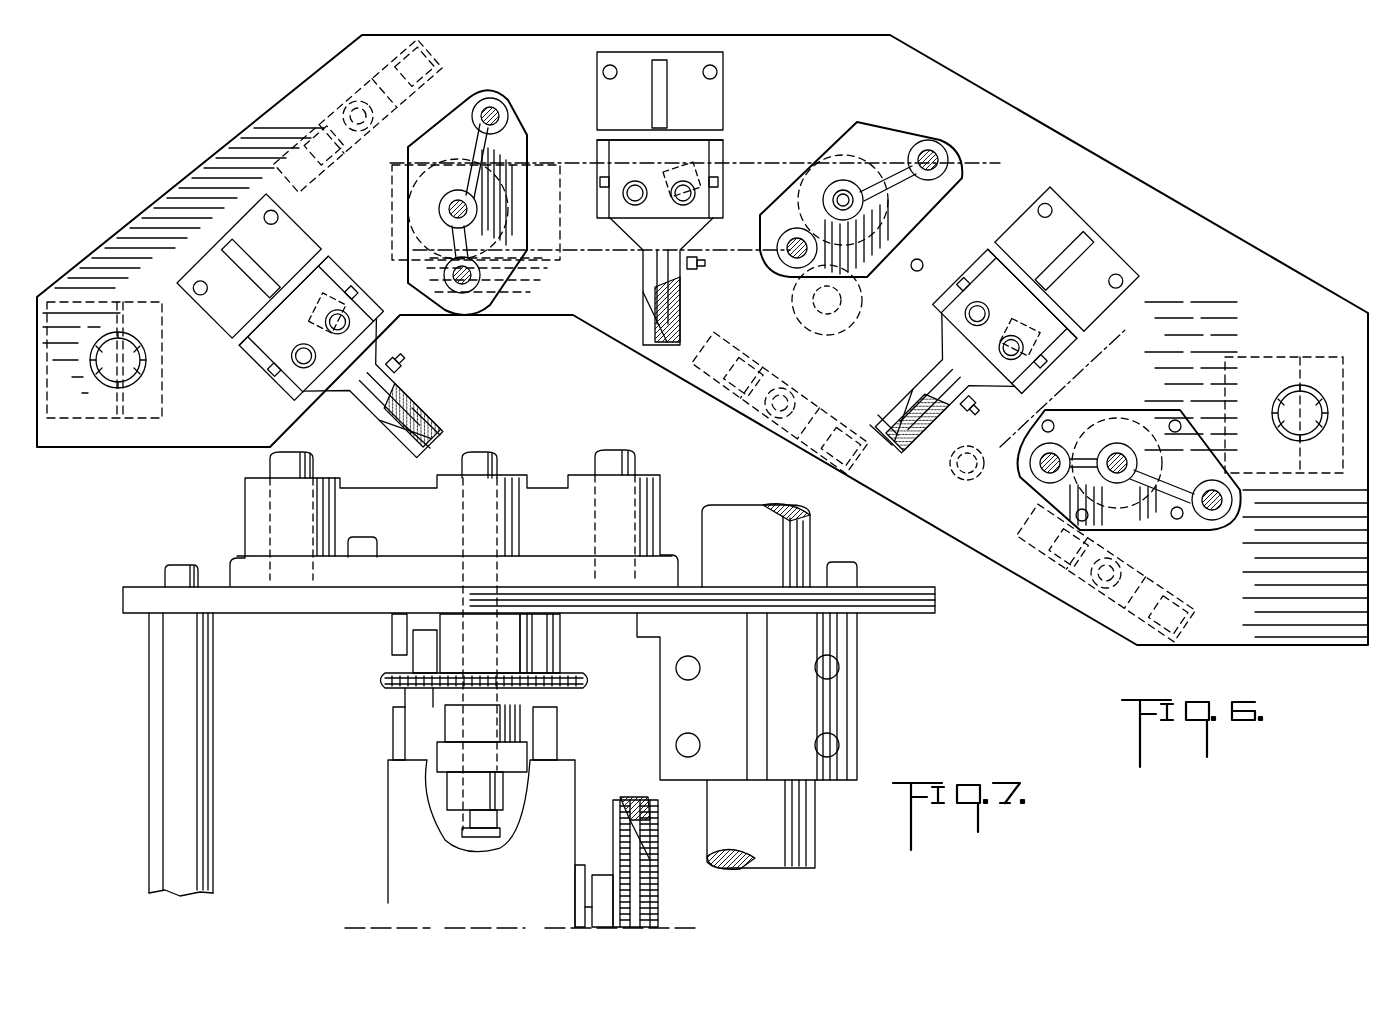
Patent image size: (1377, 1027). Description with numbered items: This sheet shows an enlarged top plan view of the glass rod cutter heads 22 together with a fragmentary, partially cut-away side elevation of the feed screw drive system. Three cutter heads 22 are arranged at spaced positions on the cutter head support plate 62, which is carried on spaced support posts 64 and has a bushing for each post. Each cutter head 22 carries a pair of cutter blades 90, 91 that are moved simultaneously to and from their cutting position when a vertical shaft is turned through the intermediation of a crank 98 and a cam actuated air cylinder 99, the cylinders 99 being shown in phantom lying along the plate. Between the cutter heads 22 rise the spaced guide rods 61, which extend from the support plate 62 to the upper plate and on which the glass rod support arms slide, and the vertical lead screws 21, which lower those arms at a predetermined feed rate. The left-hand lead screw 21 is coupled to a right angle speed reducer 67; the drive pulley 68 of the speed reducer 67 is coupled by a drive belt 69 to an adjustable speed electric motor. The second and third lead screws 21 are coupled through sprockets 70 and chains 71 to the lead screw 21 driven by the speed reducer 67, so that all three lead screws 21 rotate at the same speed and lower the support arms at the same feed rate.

In FIG. 7, the lead screw 21 is at (497, 466).
In FIG. 6, the cutter head 22 is at (344, 236).
In FIG. 7, the guide rod 61 is at (300, 465).
In FIG. 6, the cutter head support plate 62 is at (262, 412).
In FIG. 7, the cutter head support plate 62 is at (815, 580).
In FIG. 6, the support post 64 is at (148, 360).
In FIG. 7, the support post 64 is at (730, 512).
In FIG. 6, the right angle speed reducer 67 is at (553, 257).
In FIG. 7, the right angle speed reducer 67 is at (410, 843).
In FIG. 6, the drive pulley 68 is at (502, 297).
In FIG. 7, the drive pulley 68 is at (658, 890).
In FIG. 7, the drive belt 69 is at (627, 797).
In FIG. 6, the sprocket 70 is at (503, 183).
In FIG. 7, the sprocket 70 is at (560, 678).
In FIG. 6, the chain 71 is at (802, 128).
In FIG. 6, the cutter blade 90 is at (418, 440).
In FIG. 6, the cutter blade 91 is at (440, 425).
In FIG. 6, the crank 98 is at (985, 470).
In FIG. 6, the cam actuated air cylinder 99 is at (312, 140).